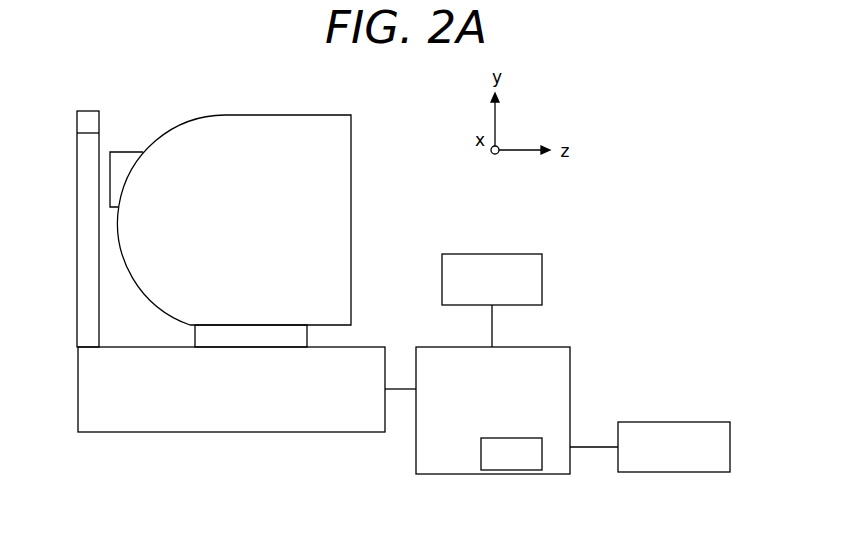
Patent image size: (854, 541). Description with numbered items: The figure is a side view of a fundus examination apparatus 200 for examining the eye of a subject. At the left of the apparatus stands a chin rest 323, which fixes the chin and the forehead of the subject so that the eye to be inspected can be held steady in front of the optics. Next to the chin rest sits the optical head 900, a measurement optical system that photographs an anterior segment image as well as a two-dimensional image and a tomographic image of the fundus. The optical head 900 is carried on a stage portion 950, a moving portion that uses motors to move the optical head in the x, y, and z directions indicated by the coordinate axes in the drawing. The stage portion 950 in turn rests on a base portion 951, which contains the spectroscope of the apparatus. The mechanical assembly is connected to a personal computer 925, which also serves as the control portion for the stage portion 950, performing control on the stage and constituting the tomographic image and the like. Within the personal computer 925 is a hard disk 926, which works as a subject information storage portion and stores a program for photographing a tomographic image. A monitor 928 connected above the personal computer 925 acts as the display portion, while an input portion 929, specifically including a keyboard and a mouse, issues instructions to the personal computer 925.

The fundus examination apparatus 200 is at (227, 76).
The chin rest 323 is at (93, 110).
The optical head 900 is at (230, 220).
The stage portion 950 is at (192, 335).
The base portion 951 is at (142, 422).
The personal computer 925 is at (493, 410).
The hard disk 926 is at (511, 454).
The monitor 928 is at (492, 279).
The input portion 929 is at (674, 447).